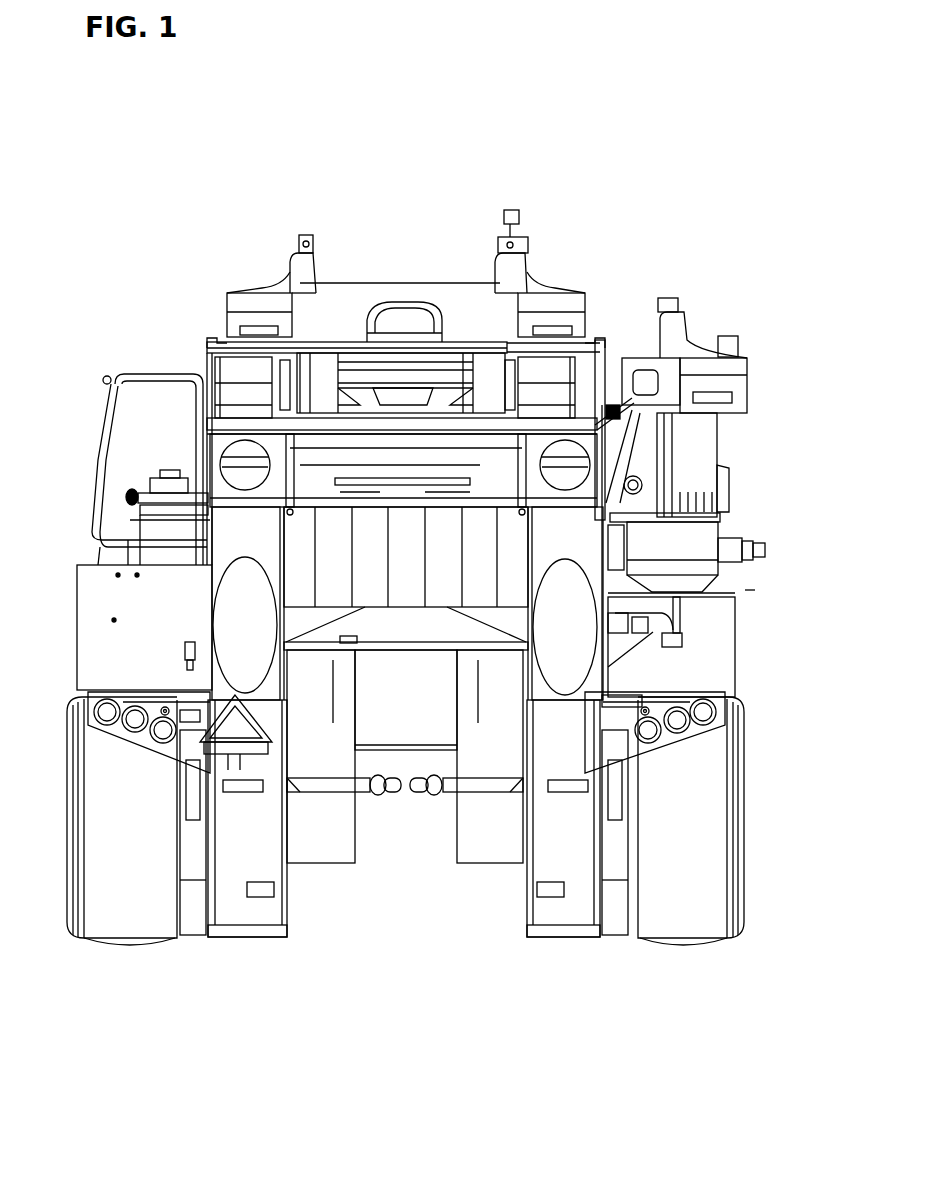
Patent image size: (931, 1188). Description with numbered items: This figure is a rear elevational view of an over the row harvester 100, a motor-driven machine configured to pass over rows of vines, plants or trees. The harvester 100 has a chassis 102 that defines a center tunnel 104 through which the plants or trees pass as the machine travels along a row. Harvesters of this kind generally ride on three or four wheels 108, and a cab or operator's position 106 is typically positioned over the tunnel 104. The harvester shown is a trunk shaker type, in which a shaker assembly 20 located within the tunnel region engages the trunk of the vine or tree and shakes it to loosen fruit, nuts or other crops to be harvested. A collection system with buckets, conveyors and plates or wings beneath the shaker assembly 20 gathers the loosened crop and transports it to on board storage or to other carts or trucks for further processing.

The harvester 100 is at (150, 215).
The chassis 102 is at (93, 625).
The center tunnel 104 is at (440, 968).
The cab or operator's position 106 is at (405, 318).
The wheels 108 is at (97, 873).
The shaker assembly 20 is at (408, 806).